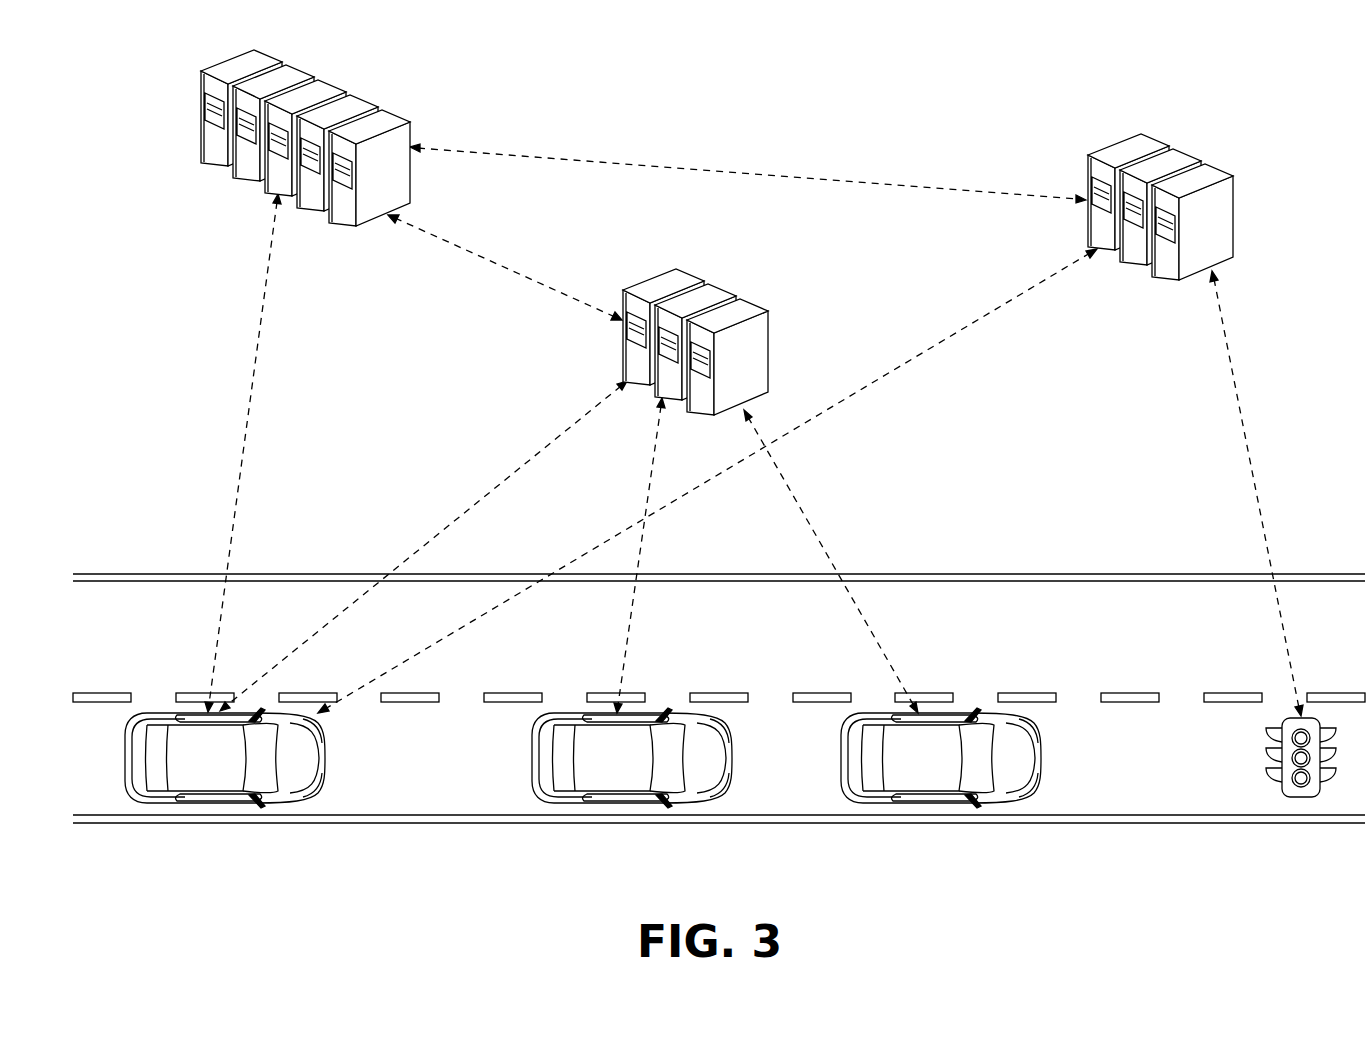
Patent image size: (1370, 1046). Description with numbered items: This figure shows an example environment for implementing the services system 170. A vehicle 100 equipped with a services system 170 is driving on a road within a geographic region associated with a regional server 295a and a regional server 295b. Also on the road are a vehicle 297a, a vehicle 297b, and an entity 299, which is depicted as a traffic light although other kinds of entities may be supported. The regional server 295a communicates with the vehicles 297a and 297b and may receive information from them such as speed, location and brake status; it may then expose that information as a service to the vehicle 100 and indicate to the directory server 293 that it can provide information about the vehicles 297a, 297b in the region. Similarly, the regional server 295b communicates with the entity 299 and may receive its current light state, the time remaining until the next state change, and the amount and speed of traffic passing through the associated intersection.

The directory server 293 is at (398, 118).
The regional server 295a is at (772, 325).
The regional server 295b is at (1233, 195).
The vehicle 100 is at (280, 802).
The services system 170 is at (203, 760).
The vehicle 297a is at (608, 800).
The vehicle 297b is at (892, 800).
The entity 299 is at (1301, 798).